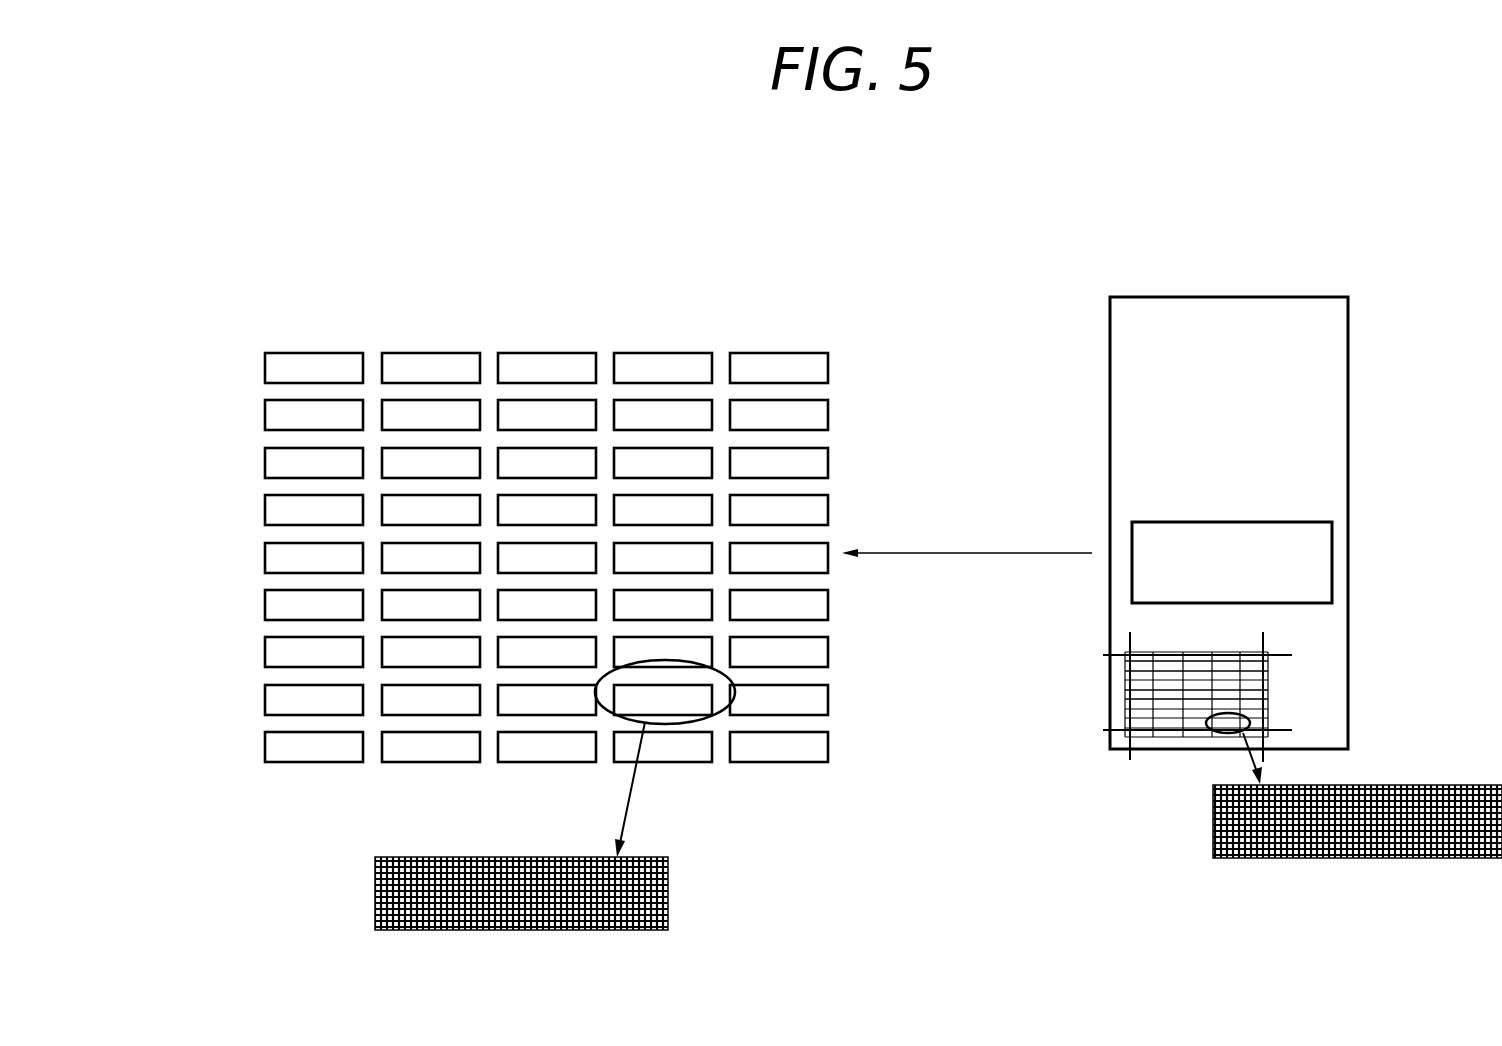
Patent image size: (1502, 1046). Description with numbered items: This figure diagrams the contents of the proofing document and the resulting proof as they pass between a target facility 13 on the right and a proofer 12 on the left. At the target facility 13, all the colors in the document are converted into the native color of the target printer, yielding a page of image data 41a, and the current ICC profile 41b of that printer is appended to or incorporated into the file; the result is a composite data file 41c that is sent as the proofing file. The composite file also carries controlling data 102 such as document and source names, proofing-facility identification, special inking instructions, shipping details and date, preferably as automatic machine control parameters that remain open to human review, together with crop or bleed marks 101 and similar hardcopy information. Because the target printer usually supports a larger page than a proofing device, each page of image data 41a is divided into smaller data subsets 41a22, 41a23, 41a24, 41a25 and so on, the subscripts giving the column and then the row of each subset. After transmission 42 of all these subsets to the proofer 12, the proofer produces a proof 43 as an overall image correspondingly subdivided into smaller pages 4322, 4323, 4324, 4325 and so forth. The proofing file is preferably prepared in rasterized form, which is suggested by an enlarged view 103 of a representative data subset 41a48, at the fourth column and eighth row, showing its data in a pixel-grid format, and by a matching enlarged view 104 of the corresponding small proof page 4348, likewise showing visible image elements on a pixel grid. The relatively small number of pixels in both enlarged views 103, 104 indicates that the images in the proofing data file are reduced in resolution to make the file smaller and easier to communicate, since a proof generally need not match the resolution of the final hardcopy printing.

The proofer 12 is at (545, 188).
The target facility 13 is at (1258, 178).
The proof 43 is at (817, 410).
The small page 4322 is at (422, 408).
The small page 4323 is at (400, 464).
The small page 4324 is at (400, 507).
The small page 4325 is at (400, 561).
The small page 4348 is at (682, 695).
The proofing document 42 is at (687, 602).
The enlarged view of proof image portion 104 is at (625, 792).
The controlling data 102 is at (1217, 378).
The composite data file 41c is at (1349, 371).
The ICC profile 41b is at (1313, 572).
The image data 41a is at (1228, 683).
The data subset 41a22 is at (1158, 670).
The data subset 41a23 is at (1158, 675).
The data subset 41a24 is at (1158, 697).
The data subset 41a25 is at (1160, 703).
The data subset 41a48 is at (1212, 819).
The crop or bleed marks 101 is at (1112, 735).
The enlarged view of data portion 103 is at (1262, 770).